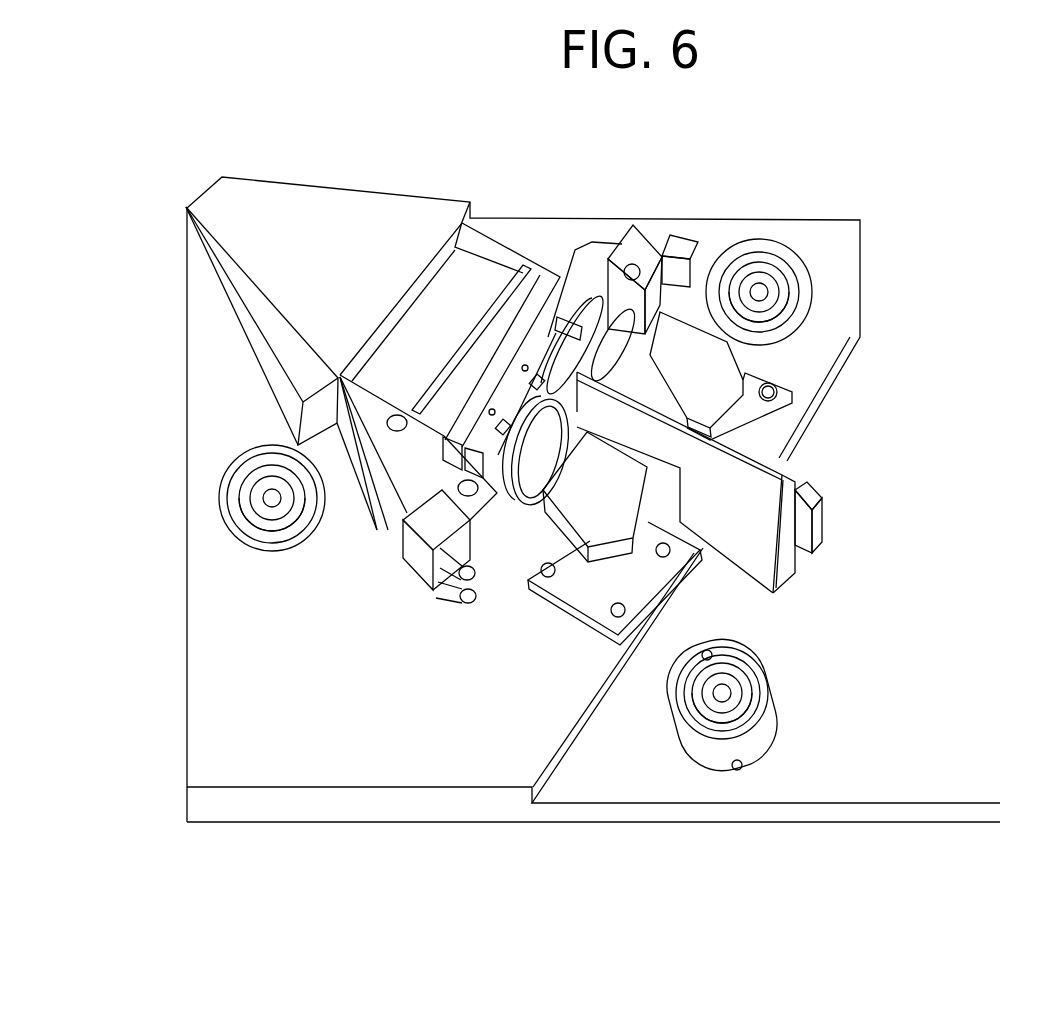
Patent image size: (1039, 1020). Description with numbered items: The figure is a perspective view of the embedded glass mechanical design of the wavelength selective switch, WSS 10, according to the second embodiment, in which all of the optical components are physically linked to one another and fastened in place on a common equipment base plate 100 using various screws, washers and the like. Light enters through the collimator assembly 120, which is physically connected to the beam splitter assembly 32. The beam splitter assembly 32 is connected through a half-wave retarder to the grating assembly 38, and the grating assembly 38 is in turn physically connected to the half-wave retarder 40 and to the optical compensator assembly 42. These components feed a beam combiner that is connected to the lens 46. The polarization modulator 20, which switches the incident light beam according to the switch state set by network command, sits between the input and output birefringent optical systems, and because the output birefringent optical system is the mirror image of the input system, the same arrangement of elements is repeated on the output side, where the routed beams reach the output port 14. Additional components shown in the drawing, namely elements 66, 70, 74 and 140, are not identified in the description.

The WSS 10 is at (549, 507).
The output port 14 is at (288, 411).
The polarization modulator 20 is at (753, 496).
The beam splitter assembly 32 is at (335, 477).
The grating assembly 38 is at (230, 212).
The half-wave retarder 40 is at (422, 352).
The optical compensator assembly 42 is at (452, 295).
The lens 46 is at (529, 420).
The lens 66 is at (705, 454).
The invar wedge / penta prisms 70 is at (838, 487).
The invar spacer 74 is at (550, 314).
The equipment base plate 100 is at (640, 822).
The collimator assembly 120 is at (428, 608).
The mounting block 140 is at (700, 247).